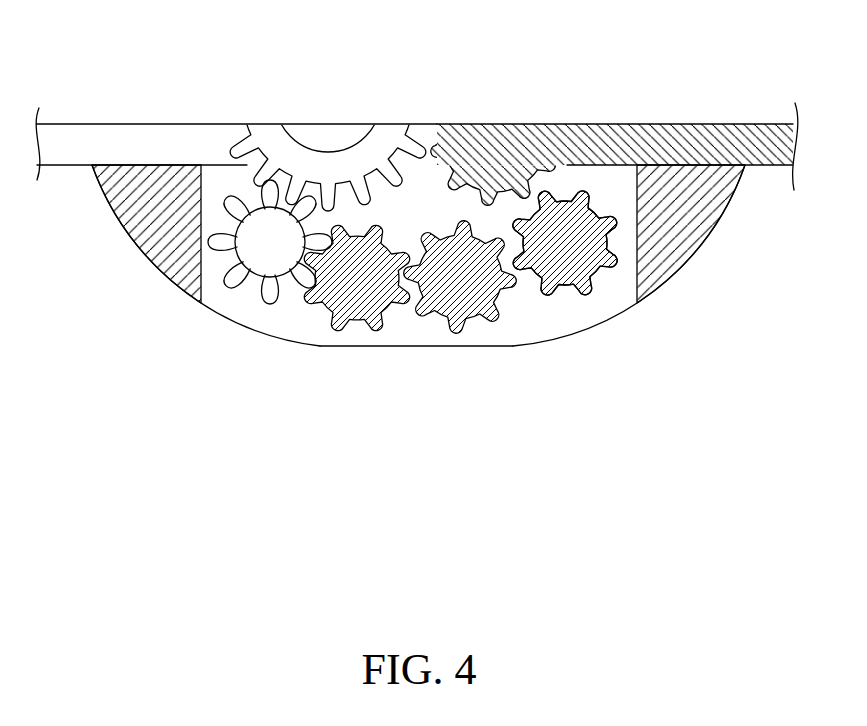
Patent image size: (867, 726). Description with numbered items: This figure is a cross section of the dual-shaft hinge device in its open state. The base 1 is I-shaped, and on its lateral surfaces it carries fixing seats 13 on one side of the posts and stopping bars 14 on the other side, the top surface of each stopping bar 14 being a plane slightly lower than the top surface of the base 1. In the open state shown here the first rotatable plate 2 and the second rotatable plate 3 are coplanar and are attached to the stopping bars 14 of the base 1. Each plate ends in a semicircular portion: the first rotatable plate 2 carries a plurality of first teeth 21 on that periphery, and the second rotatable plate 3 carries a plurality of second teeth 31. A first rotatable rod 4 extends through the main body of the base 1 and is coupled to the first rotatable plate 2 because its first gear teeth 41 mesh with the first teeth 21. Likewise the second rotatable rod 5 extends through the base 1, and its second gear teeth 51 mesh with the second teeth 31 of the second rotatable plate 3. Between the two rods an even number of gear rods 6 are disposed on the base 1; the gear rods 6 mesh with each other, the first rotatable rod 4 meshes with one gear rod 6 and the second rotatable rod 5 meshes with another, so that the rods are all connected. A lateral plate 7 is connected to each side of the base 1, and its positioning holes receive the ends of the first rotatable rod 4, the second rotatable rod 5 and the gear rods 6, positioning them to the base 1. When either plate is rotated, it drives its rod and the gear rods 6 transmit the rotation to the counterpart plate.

The base 1 is at (704, 253).
The fixing seat 13 is at (682, 198).
The stopping bar 14 is at (158, 220).
The first rotatable plate 2 is at (152, 118).
The second rotatable plate 3 is at (724, 118).
The first teeth 21 is at (365, 195).
The second teeth 31 is at (443, 177).
The first rotatable rod 4 is at (261, 291).
The first gear teeth 41 is at (277, 264).
The second rotatable rod 5 is at (594, 297).
The second gear teeth 51 is at (560, 283).
The gear rods 6 is at (457, 280).
The lateral plate 7 is at (533, 333).